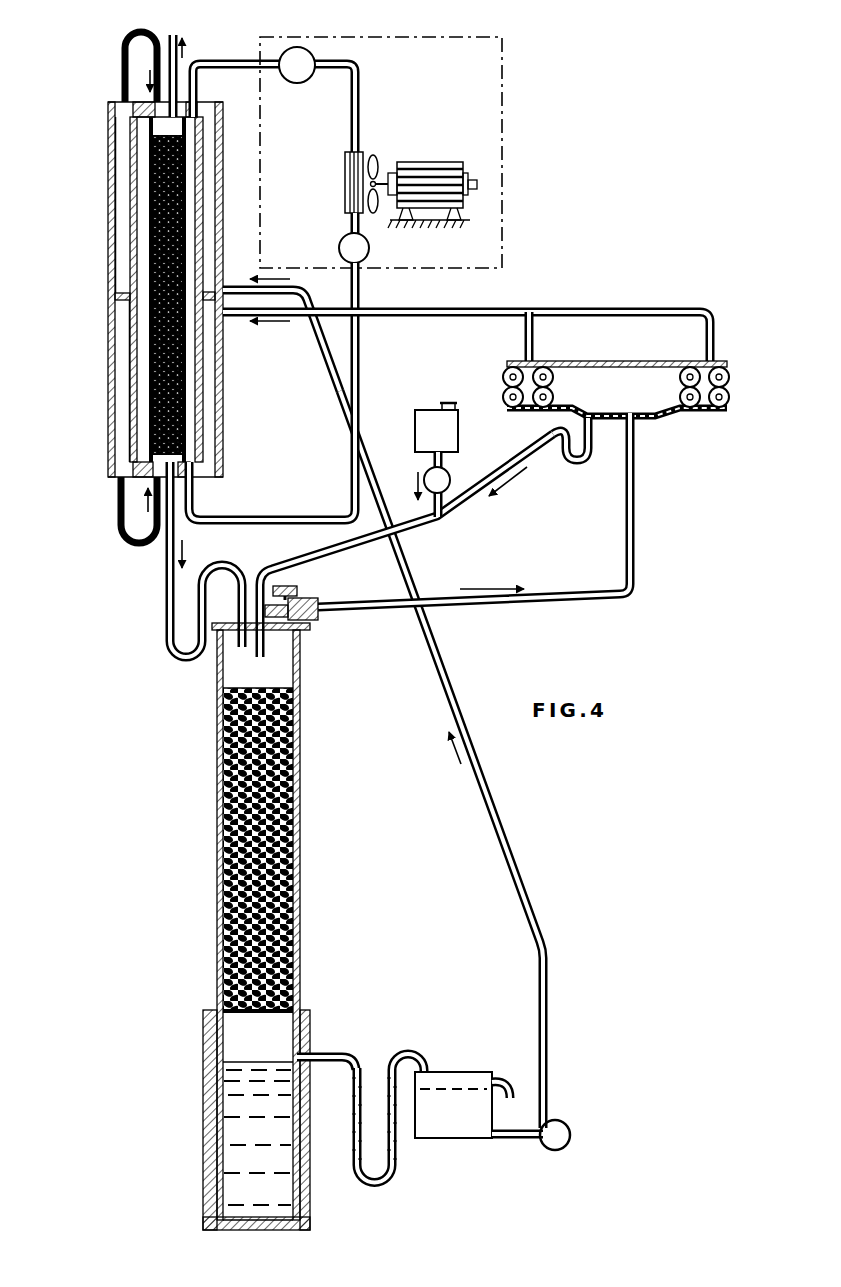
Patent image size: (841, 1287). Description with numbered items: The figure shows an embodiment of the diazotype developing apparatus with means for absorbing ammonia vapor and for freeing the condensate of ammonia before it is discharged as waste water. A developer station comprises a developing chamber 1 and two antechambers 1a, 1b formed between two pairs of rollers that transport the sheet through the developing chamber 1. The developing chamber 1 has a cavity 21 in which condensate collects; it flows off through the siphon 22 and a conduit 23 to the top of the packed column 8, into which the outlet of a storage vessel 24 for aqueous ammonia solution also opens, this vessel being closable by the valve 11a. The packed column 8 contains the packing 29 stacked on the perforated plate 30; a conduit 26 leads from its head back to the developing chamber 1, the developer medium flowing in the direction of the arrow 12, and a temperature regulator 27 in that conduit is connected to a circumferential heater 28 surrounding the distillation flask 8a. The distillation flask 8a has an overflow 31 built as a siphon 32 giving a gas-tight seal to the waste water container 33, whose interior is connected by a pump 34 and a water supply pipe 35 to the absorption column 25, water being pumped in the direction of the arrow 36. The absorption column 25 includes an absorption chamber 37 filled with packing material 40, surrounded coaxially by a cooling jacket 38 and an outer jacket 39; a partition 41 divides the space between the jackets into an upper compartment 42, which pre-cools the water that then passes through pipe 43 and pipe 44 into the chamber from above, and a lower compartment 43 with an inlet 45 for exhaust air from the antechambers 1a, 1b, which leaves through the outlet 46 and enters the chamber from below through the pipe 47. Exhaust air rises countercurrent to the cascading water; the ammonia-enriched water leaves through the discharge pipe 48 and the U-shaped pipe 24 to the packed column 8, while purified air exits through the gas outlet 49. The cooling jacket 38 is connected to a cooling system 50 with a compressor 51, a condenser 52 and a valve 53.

The developing chamber 1 is at (600, 382).
The antechamber 1a is at (527, 404).
The antechamber 1b is at (700, 412).
The packed column 8 is at (300, 830).
The distillation flask 8a is at (280, 1045).
The valve 11a is at (424, 478).
The arrow 12 is at (486, 588).
The cavity 21 is at (610, 412).
The siphon 22 is at (569, 462).
The conduit 23 is at (425, 531).
The storage vessel 24 is at (416, 432).
The absorption column 25 is at (225, 397).
The conduit 26 is at (456, 612).
The temperature regulator 27 is at (297, 588).
The circumferential heater 28 is at (303, 1168).
The packing 29 is at (295, 758).
The perforated plate 30 is at (300, 992).
The overflow 31 is at (348, 1058).
The siphon 32 is at (380, 1183).
The container 33 is at (448, 1130).
The pump 34 is at (553, 1150).
The water supply pipe 35 is at (484, 816).
The arrow 36 is at (453, 758).
The absorption chamber 37 is at (150, 158).
The cooling jacket 38 is at (131, 242).
The outer jacket 39 is at (108, 362).
The packing material 40 is at (150, 186).
The partition 41 is at (122, 302).
The upper compartment 42 is at (122, 264).
The lower compartment 43 is at (121, 100).
The pipe 44 is at (134, 46).
The inlet 45 is at (240, 317).
The outlet 46 is at (118, 480).
The pipe 47 is at (140, 545).
The discharge pipe 48 is at (193, 486).
The gas outlet 49 is at (193, 90).
The cooling system 50 is at (503, 188).
The compressor 51 is at (309, 54).
The condenser 52 is at (345, 178).
The valve 53 is at (341, 243).